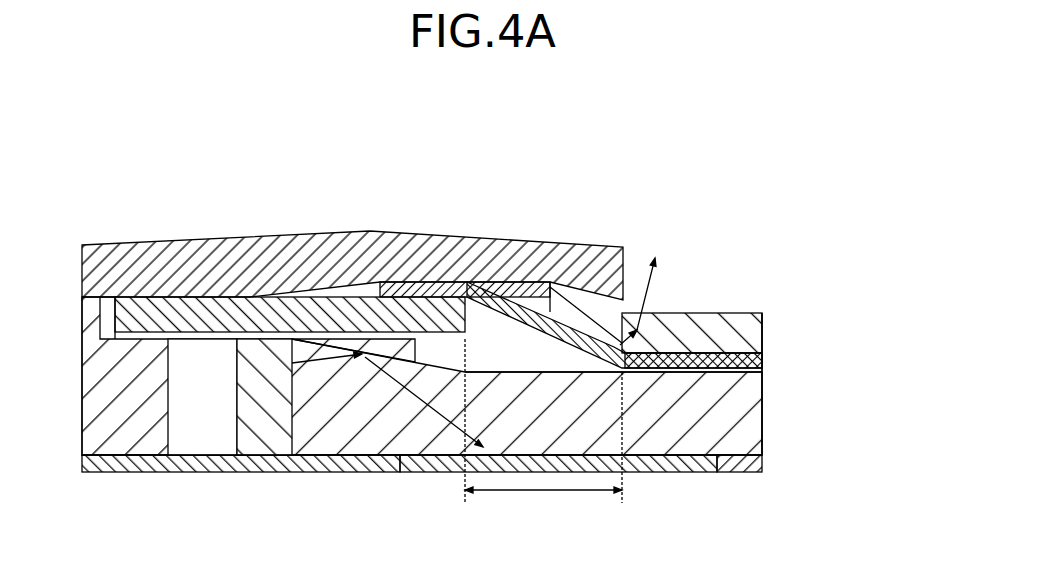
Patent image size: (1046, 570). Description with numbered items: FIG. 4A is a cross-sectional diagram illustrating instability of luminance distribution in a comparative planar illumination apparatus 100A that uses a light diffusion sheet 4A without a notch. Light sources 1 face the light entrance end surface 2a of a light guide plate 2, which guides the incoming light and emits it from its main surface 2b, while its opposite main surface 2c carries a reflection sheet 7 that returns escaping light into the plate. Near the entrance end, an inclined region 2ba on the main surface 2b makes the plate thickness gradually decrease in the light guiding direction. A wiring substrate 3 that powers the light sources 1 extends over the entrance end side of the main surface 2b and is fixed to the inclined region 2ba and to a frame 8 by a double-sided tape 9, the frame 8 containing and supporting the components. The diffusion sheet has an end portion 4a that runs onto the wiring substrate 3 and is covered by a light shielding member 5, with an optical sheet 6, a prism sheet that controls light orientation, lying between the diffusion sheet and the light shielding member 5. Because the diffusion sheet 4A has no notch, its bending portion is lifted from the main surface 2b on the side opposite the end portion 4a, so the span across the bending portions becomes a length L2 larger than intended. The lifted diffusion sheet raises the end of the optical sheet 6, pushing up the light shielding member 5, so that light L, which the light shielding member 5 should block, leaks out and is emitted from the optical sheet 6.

The planar illumination apparatus 100A is at (792, 150).
The light source 1 is at (243, 457).
The light guide plate 2 is at (776, 447).
The light entrance end surface 2a is at (283, 457).
The main surface 2b is at (740, 325).
The inclined region 2ba is at (464, 280).
The main surface 2c is at (717, 473).
The wiring substrate 3 is at (325, 317).
The end portion 4a is at (372, 280).
The light diffusion sheet 4A is at (684, 351).
The light shielding member 5 is at (538, 262).
The optical sheet 6 is at (710, 325).
The reflection sheet 7 is at (670, 473).
The frame 8 is at (122, 456).
The double-sided tape 9 is at (393, 350).
The light L is at (437, 342).
The length L2 is at (543, 429).